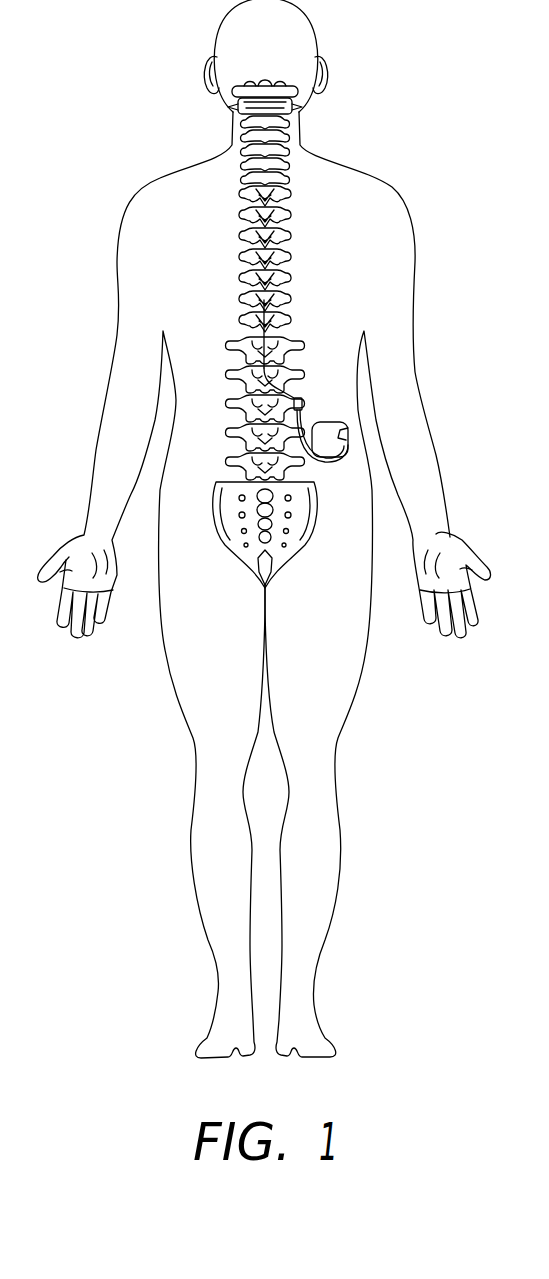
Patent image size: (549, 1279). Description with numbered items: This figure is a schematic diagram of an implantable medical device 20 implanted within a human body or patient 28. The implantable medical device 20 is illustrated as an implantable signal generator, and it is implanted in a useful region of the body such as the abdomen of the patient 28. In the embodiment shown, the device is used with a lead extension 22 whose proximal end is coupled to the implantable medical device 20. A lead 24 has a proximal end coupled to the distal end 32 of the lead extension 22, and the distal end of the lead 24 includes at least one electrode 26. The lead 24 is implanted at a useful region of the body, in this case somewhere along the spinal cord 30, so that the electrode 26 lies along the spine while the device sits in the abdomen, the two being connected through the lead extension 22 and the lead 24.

The implantable medical device 20 is at (336, 440).
The lead extension 22 is at (341, 464).
The lead 24 is at (283, 386).
The electrode 26 is at (268, 325).
The patient 28 is at (370, 176).
The spinal cord 30 is at (290, 256).
The distal end of the lead extension 32 is at (302, 405).